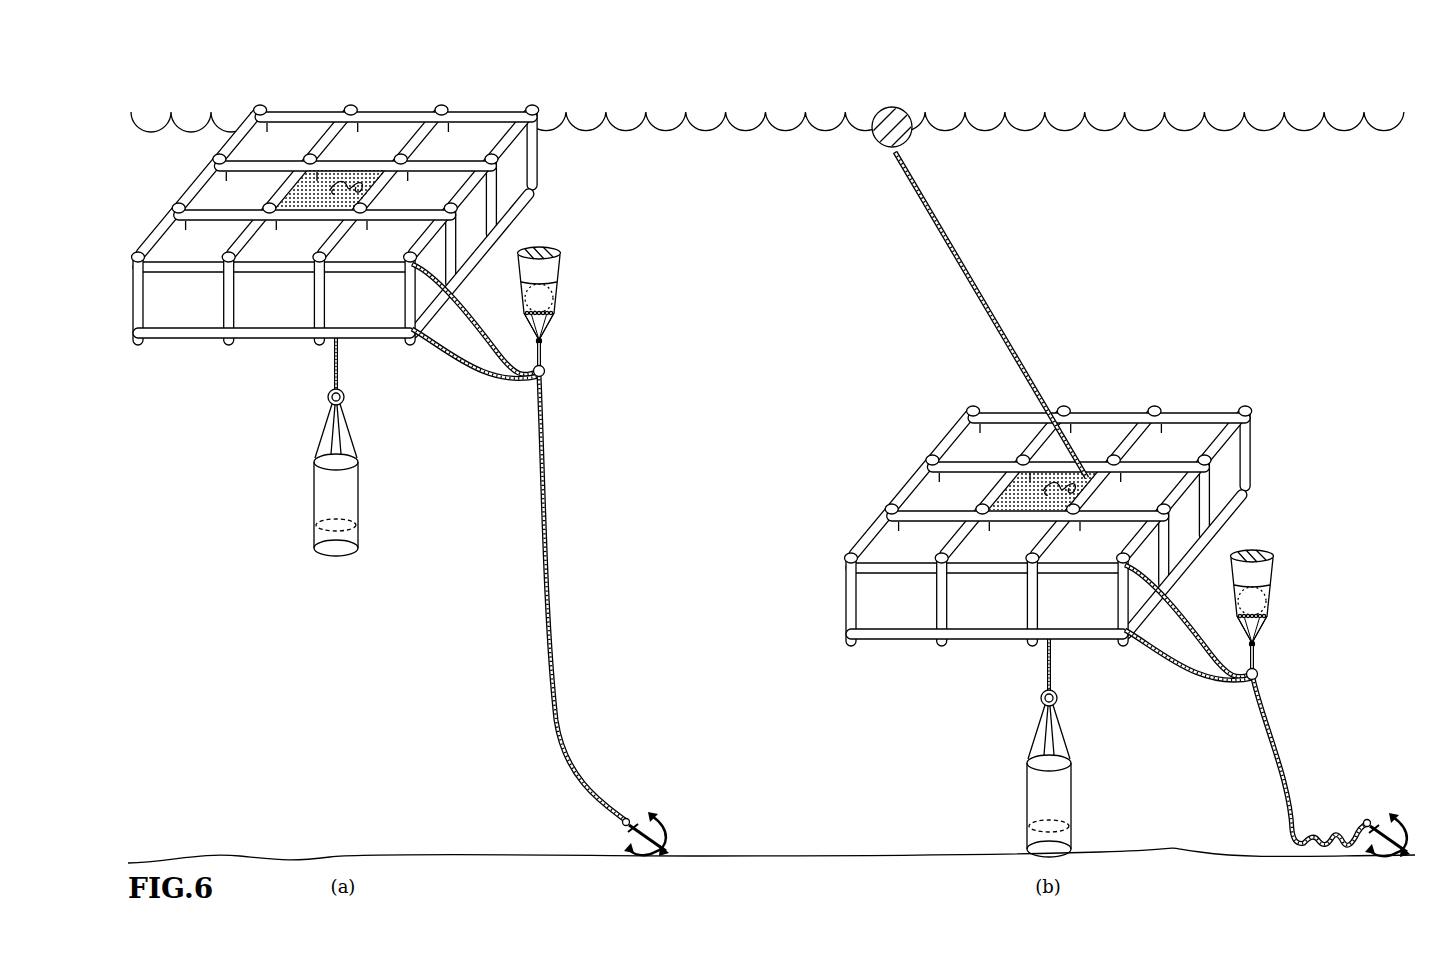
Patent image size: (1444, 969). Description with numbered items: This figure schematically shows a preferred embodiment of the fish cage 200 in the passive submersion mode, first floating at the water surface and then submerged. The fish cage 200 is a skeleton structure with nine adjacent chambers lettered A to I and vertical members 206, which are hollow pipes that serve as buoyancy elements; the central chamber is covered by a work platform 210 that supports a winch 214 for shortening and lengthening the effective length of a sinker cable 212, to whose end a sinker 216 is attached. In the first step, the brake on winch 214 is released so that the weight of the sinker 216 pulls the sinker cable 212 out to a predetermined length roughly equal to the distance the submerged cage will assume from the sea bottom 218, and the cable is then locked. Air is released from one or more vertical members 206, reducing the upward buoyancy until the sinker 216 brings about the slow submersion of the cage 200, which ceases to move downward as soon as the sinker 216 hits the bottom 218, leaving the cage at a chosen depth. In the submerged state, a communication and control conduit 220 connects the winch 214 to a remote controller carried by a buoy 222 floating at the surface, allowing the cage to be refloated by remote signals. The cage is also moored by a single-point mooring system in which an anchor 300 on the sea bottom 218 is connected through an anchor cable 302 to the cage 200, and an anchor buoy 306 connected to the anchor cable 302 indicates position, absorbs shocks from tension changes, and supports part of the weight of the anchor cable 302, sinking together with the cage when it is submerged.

The fish cage 200 is at (383, 109).
The vertical members 206 is at (532, 153).
The work platform 210 is at (308, 187).
The winch mechanism 214 is at (345, 172).
The sinker cable 212 is at (333, 367).
The sinker 216 is at (345, 487).
The sea bottom 218 is at (236, 857).
The communication and control conduit 220 is at (963, 277).
The buoy 222 is at (903, 148).
The anchor 300 is at (640, 818).
The anchor cable 302 is at (548, 440).
The anchor buoy 306 is at (568, 284).